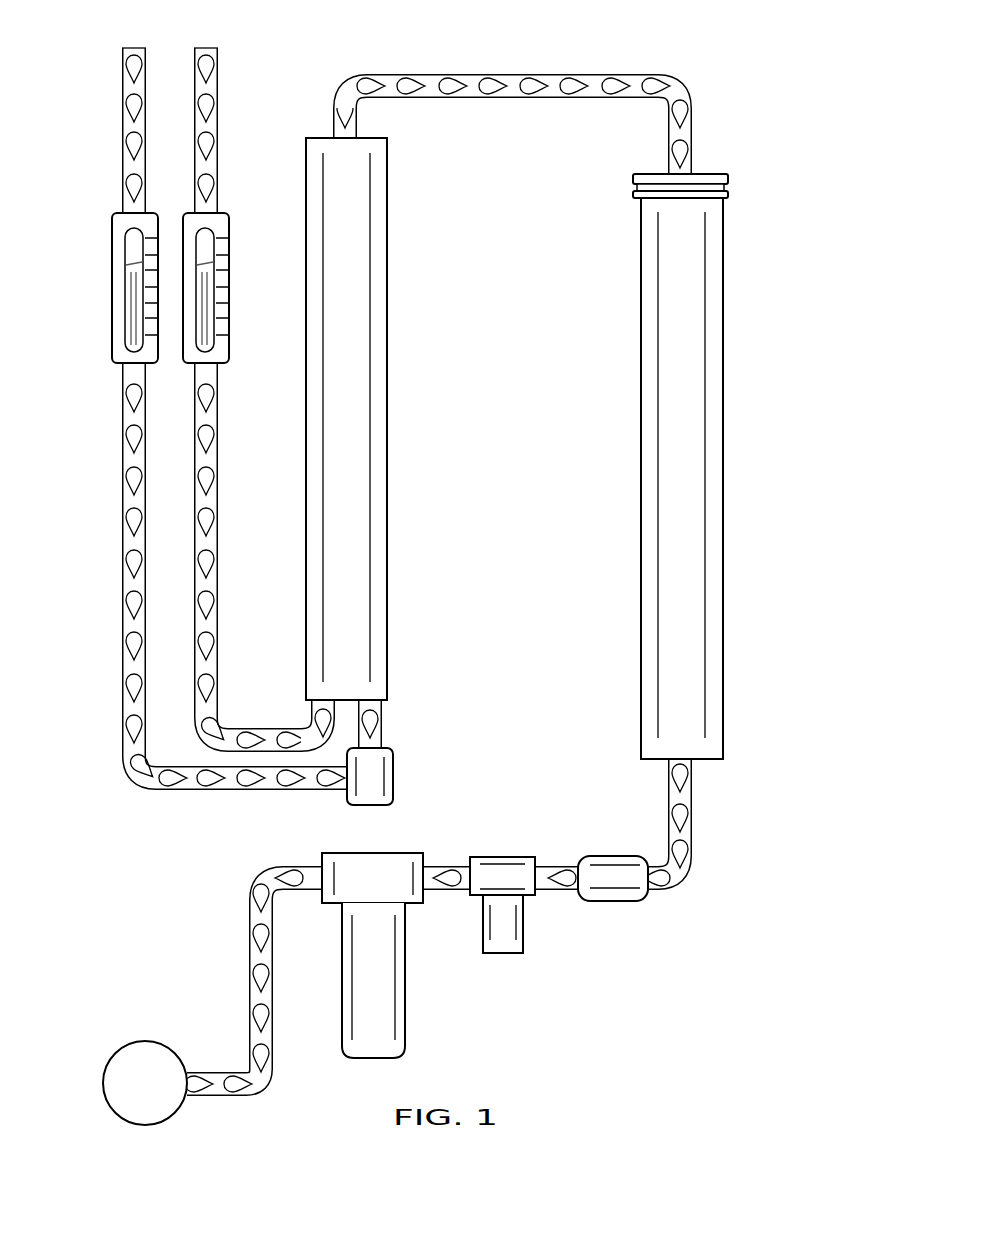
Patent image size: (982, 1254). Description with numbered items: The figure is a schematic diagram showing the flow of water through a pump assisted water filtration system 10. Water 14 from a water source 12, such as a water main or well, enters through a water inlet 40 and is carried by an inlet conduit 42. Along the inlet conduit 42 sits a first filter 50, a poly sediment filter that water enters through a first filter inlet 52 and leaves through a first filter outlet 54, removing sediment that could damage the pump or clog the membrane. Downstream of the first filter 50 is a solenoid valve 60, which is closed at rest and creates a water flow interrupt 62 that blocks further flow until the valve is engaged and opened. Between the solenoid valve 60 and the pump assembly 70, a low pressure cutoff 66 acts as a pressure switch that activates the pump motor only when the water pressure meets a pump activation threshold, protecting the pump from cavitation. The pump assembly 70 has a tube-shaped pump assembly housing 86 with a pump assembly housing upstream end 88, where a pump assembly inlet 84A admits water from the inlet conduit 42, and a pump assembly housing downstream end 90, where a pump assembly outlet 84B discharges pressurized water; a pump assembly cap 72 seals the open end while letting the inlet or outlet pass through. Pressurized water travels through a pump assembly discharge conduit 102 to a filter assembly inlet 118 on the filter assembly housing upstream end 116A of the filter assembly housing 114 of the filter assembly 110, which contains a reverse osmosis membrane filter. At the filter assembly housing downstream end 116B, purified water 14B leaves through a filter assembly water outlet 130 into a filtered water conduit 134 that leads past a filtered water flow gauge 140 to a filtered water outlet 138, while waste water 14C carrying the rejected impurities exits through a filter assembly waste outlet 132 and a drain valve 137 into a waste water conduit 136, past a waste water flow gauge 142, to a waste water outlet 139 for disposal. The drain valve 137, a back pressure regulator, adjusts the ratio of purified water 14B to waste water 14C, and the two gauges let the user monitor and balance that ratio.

The pump assisted water filtration system 10 is at (443, 578).
The water source 12 is at (120, 1052).
The water 14 is at (237, 1087).
The purified water 14B is at (233, 737).
The waste water 14C is at (250, 790).
The water inlet 40 is at (213, 1072).
The inlet conduit 42 is at (692, 830).
The first filter 50 is at (405, 965).
The first filter inlet 52 is at (322, 860).
The first filter outlet 54 is at (423, 862).
The solenoid valve 60 is at (523, 927).
The water flow interrupt 62 is at (512, 877).
The low pressure cutoff 66 is at (637, 902).
The pump assembly 70 is at (737, 466).
The pump assembly cap 72 is at (728, 184).
The pump assembly inlet 84A is at (692, 765).
The pump assembly outlet 84B is at (692, 165).
The pump assembly housing 86 is at (722, 590).
The pump assembly housing upstream end 88 is at (723, 758).
The pump assembly housing downstream end 90 is at (723, 200).
The pump assembly discharge conduit 102 is at (682, 76).
The filter assembly 110 is at (400, 427).
The filter assembly housing 114 is at (387, 478).
The filter assembly housing upstream end 116A is at (387, 142).
The filter assembly housing downstream end 116B is at (387, 700).
The filter assembly inlet 118 is at (352, 138).
The filter assembly water outlet 130 is at (312, 703).
The filter assembly waste outlet 132 is at (382, 712).
The filtered water conduit 134 is at (217, 560).
The waste water conduit 136 is at (122, 566).
The drain valve 137 is at (393, 778).
The filtered water outlet 138 is at (218, 95).
The waste water outlet 139 is at (122, 106).
The filtered water flow gauge 140 is at (228, 306).
The waste water flow gauge 142 is at (112, 286).